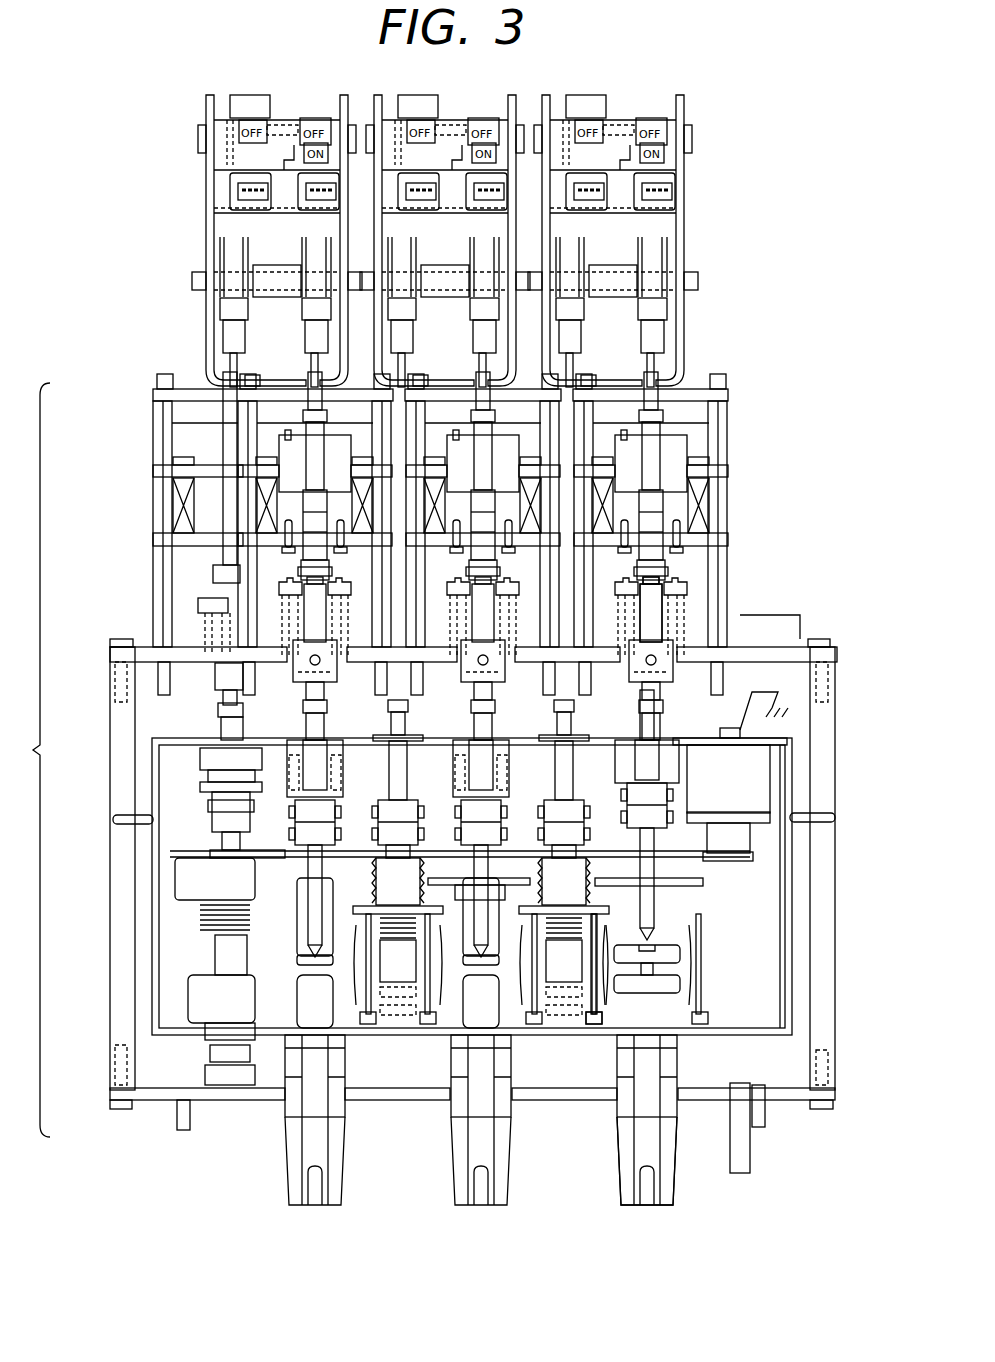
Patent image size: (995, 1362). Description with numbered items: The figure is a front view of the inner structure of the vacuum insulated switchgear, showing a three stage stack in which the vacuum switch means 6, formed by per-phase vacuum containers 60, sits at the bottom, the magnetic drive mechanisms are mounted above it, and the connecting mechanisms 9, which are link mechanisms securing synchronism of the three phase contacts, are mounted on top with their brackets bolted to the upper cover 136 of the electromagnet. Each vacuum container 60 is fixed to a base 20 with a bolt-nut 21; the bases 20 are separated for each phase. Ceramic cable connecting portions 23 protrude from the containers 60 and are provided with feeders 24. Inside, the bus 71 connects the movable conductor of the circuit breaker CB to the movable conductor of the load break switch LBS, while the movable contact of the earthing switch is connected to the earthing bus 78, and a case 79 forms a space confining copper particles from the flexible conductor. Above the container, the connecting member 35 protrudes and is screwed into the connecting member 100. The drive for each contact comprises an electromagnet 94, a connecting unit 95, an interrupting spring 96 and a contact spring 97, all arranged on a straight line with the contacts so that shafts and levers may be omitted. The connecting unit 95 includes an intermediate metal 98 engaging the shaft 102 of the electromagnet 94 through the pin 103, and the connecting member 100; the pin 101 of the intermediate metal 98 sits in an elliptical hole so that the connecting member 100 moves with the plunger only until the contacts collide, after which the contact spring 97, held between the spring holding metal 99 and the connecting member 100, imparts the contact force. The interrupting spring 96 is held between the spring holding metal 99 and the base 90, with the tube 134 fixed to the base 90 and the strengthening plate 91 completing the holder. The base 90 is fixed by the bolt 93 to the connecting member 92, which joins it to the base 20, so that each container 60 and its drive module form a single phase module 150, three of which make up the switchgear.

The connecting mechanism 9 is at (680, 104).
The upper cover 136 is at (688, 385).
The tube 134 is at (150, 572).
The electromagnet 94 is at (703, 412).
The shaft 102 is at (648, 493).
The pin 103 is at (667, 572).
The spring holding metal 99 is at (657, 608).
The intermediate metal 98 is at (680, 615).
The interrupting spring 96 is at (687, 622).
The contact spring 97 is at (670, 630).
The connecting unit 95 is at (638, 616).
The pin 101 is at (652, 630).
The strengthening plate 91 is at (785, 628).
The base 90 is at (752, 655).
The bolt 93 is at (820, 647).
The connecting member 92 is at (822, 740).
The case 79 is at (735, 738).
The vacuum switch means 6 is at (762, 962).
The vacuum container 60 is at (792, 885).
The connecting member 100 is at (213, 670).
The load break switch LBS is at (280, 1013).
The circuit breaker CB is at (677, 998).
The connecting member 35 is at (672, 724).
The earthing bus 78 is at (690, 847).
The bus 71 is at (613, 862).
The base 20 is at (822, 1092).
The bolt-nut 21 is at (766, 1118).
The feeder 24 is at (640, 1140).
The cable connecting portion 23 is at (677, 1188).
The single phase module 150 is at (25, 760).